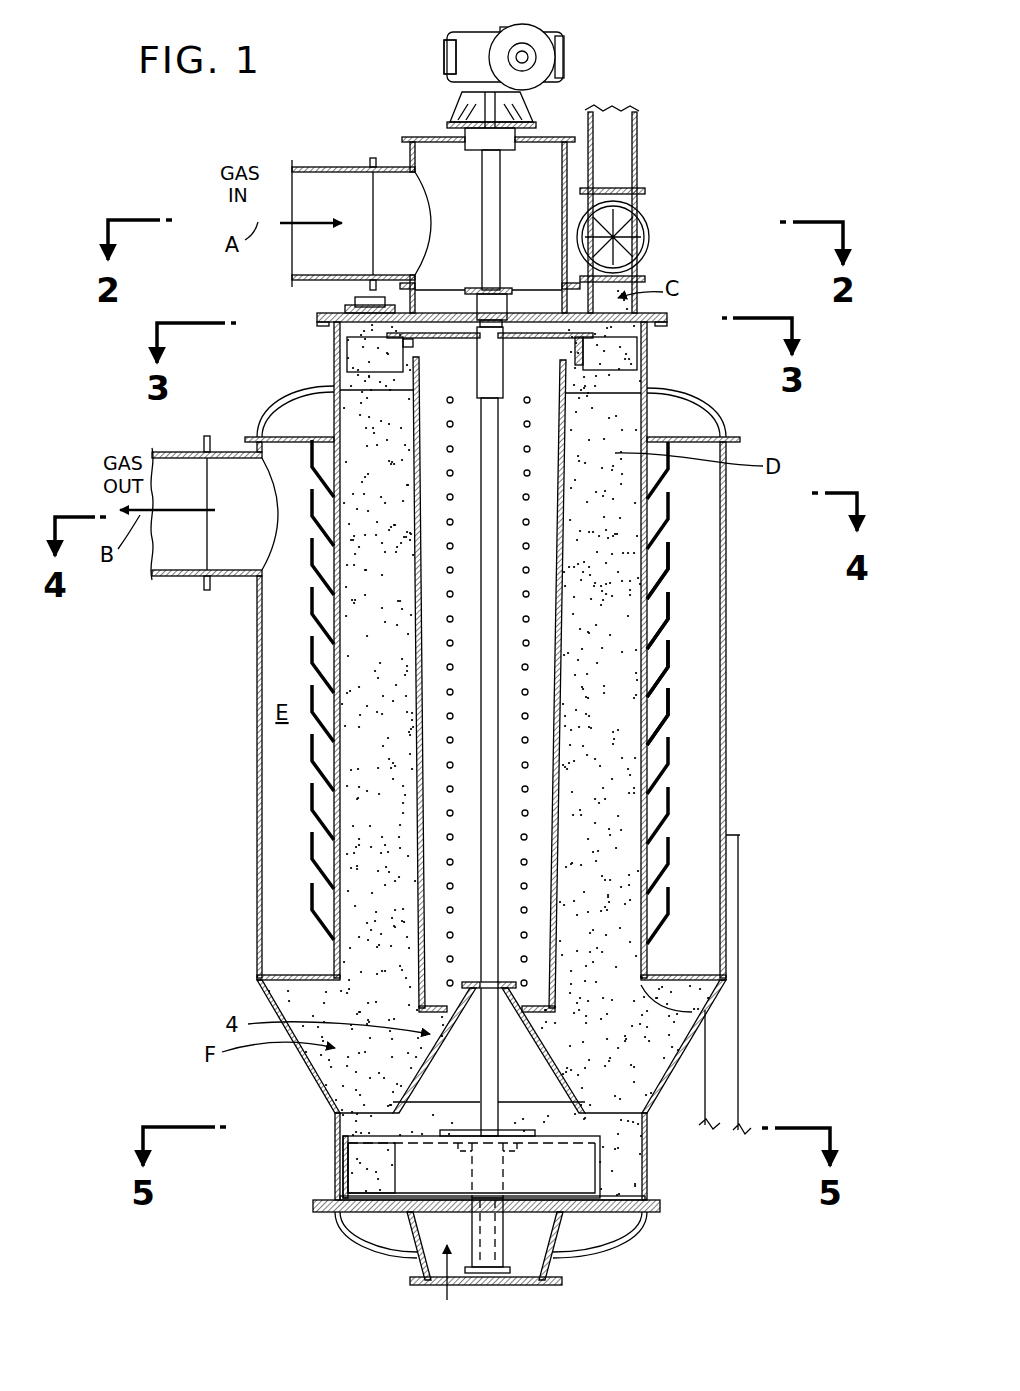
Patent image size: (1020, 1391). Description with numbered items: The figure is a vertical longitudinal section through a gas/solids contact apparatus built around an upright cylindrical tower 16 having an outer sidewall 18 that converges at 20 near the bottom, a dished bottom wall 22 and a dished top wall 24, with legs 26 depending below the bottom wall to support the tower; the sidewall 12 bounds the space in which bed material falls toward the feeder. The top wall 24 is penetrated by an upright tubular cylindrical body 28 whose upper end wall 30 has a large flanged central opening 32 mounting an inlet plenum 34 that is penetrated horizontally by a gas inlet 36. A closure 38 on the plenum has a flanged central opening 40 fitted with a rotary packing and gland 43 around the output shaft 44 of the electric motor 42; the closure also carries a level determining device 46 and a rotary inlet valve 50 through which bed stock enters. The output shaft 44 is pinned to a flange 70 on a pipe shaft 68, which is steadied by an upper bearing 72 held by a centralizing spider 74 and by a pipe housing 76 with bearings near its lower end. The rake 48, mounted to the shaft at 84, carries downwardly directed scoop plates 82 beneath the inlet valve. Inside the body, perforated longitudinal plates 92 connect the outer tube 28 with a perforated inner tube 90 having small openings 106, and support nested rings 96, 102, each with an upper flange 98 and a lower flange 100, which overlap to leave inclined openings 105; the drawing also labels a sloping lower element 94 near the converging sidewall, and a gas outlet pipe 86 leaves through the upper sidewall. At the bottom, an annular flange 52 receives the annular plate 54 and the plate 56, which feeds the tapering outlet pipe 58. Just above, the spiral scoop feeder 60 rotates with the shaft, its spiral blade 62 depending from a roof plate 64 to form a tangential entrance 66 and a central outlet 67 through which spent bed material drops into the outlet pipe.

The sidewall of the tower 12 is at (331, 1125).
The upright cylindrical tower 16 is at (218, 750).
The outer sidewall 18 is at (732, 760).
The convergence of the sidewall 20 is at (320, 1085).
The bottom wall 22 is at (615, 1250).
The top wall 24 is at (695, 406).
The legs 26 is at (740, 1076).
The tubular cylindrical body 28 is at (330, 340).
The upper end wall 30 is at (667, 316).
The axially central opening 32 is at (430, 305).
The inlet plenum 34 is at (570, 160).
The gas inlet 36 is at (396, 158).
The closure 38 is at (546, 136).
The flanged axially central opening 40 is at (414, 130).
The electric motor 42 is at (548, 30).
The rotary packing and gland 43 is at (468, 106).
The rotary output shaft 44 is at (466, 40).
The level determining device 46 is at (355, 302).
The rake 48 is at (403, 344).
The rotary inlet valve 50 is at (652, 228).
The annular flange 52 is at (660, 1207).
The annular plate 54 is at (622, 1199).
The plate 56 is at (519, 1200).
The outlet pipe 58 is at (403, 1231).
The particulate-solids feeding device 60 is at (606, 1156).
The spiral blade 62 is at (343, 1160).
The roof plate 64 is at (418, 1130).
The tangentially-opening entrance 66 is at (362, 1181).
The downwardly-opening outlet 67 is at (440, 1288).
The pipe shaft 68 is at (476, 178).
The flange 70 is at (505, 1128).
The upper support bearing 72 is at (506, 287).
The centralizing spider 74 is at (458, 300).
The pipe housing 76 is at (467, 1172).
The scoop plates 82 is at (370, 378).
The rake mounting 84 is at (472, 368).
The gas outlet pipe 86 is at (256, 545).
The inner tube 90 is at (562, 849).
The perforated longitudinal plates 92 is at (363, 1108).
The right hopper cone 94 is at (700, 1012).
The nested downwardly tapering rings 96 is at (670, 706).
The upper cylindrical flange 98 is at (672, 598).
The lower cylindrical flange 100 is at (670, 659).
The rings 102 is at (670, 623).
The openings 105 is at (658, 548).
The small openings 106 is at (417, 790).